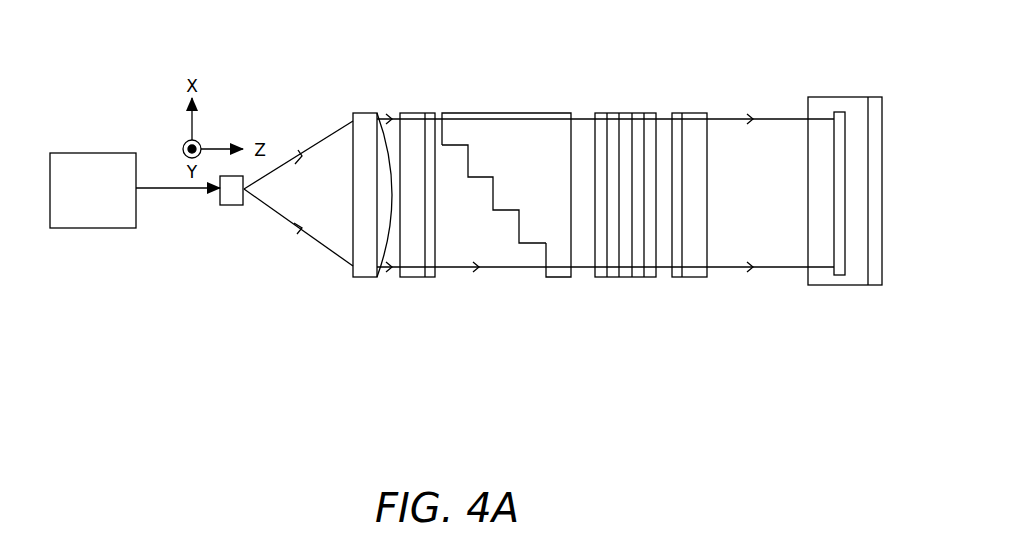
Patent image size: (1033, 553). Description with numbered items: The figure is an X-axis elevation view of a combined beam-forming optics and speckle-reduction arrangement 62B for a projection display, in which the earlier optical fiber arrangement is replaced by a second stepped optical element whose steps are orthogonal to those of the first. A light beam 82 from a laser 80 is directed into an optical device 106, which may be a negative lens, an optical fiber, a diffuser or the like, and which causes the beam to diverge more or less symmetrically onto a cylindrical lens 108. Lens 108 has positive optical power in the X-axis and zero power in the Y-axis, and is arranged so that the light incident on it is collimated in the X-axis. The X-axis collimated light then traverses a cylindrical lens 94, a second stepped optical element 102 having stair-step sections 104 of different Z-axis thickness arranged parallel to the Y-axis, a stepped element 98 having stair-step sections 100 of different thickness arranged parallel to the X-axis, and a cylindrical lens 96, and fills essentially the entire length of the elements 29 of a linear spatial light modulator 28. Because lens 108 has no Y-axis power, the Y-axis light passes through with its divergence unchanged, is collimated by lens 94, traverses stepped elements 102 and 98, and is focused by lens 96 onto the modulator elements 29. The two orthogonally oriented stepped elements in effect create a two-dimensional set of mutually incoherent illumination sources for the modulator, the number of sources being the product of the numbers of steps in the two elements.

The spatial light modulator 28 is at (832, 290).
The modulator elements 29 is at (837, 115).
The combined beam-forming optics and speckle-reduction arrangement 62B is at (558, 406).
The laser 80 is at (87, 228).
The light beam 82 is at (163, 188).
The cylindrical lens 94 is at (416, 282).
The cylindrical lens 96 is at (694, 282).
The stepped element 98 is at (624, 285).
The stair-step sections 100 is at (602, 127).
The second stepped optical element 102 is at (556, 280).
The stair-step sections 104 is at (507, 207).
The optical device 106 is at (231, 212).
The cylindrical lens 108 is at (357, 284).